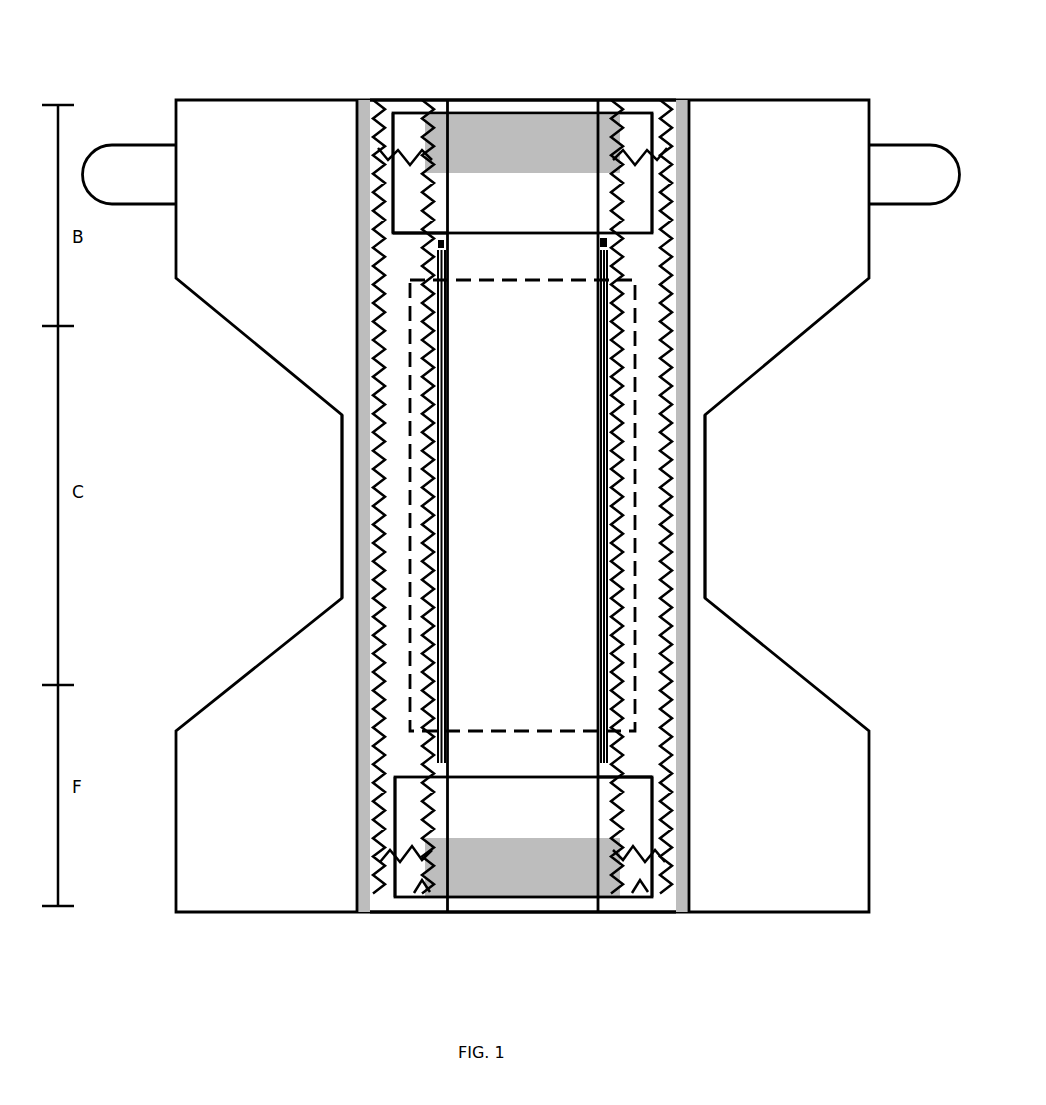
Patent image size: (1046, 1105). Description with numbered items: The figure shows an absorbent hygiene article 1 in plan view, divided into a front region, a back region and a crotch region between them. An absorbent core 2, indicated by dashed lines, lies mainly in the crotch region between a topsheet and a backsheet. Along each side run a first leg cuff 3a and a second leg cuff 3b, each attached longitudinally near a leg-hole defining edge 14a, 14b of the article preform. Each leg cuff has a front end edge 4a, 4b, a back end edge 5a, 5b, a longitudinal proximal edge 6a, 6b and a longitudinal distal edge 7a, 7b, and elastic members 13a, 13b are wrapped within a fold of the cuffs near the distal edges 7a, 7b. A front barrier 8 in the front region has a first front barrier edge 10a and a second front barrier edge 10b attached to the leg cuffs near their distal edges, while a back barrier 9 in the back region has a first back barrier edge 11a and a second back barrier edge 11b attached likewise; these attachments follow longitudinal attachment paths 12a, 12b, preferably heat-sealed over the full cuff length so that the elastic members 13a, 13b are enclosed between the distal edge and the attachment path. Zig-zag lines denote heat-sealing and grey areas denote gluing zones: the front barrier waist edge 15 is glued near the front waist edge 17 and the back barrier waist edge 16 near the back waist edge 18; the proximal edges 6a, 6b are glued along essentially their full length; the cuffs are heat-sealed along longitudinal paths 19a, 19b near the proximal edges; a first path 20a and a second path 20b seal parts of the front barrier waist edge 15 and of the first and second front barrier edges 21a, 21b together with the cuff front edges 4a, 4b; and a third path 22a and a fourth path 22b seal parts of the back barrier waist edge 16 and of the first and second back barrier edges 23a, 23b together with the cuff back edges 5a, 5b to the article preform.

The absorbent hygiene article 1 is at (460, 46).
The absorbent core 2 is at (522, 505).
The first leg cuff 3a is at (395, 437).
The second leg cuff 3b is at (652, 474).
The front end edge of first leg cuff 4a is at (402, 905).
The front end edge of second leg cuff 4b is at (645, 908).
The back end edge of first leg cuff 5a is at (393, 103).
The back end edge of second leg cuff 5b is at (644, 105).
The longitudinal proximal edge of first leg cuff 6a is at (365, 255).
The longitudinal proximal edge of second leg cuff 6b is at (680, 258).
The longitudinal distal edge of first leg cuff 7a is at (448, 400).
The longitudinal distal edge of second leg cuff 7b is at (598, 393).
The front barrier 8 is at (523, 837).
The back barrier 9 is at (522, 173).
The first front barrier edge 10a is at (410, 815).
The second front barrier edge 10b is at (632, 820).
The first back barrier edge 11a is at (404, 190).
The second back barrier edge 11b is at (636, 196).
The longitudinal attachment path 12a is at (423, 222).
The longitudinal attachment path 12b is at (618, 808).
The elastic member 13a is at (469, 507).
The elastic member 13b is at (600, 242).
The leg-hole defining edge 14a is at (342, 440).
The leg-hole defining edge 14b is at (706, 523).
The front barrier waist edge 15 is at (522, 867).
The back barrier waist edge 16 is at (522, 144).
The front waist edge 17 is at (514, 905).
The back waist edge 18 is at (518, 98).
The longitudinal path 19a is at (378, 517).
The longitudinal path 19b is at (663, 628).
The first path 20a is at (425, 843).
The second path 20b is at (636, 852).
The first front barrier edge 21a is at (405, 868).
The second front barrier edge 21b is at (640, 888).
The third path 22a is at (388, 148).
The fourth path 22b is at (628, 150).
The first back barrier edge 23a is at (410, 103).
The second back barrier edge 23b is at (632, 103).